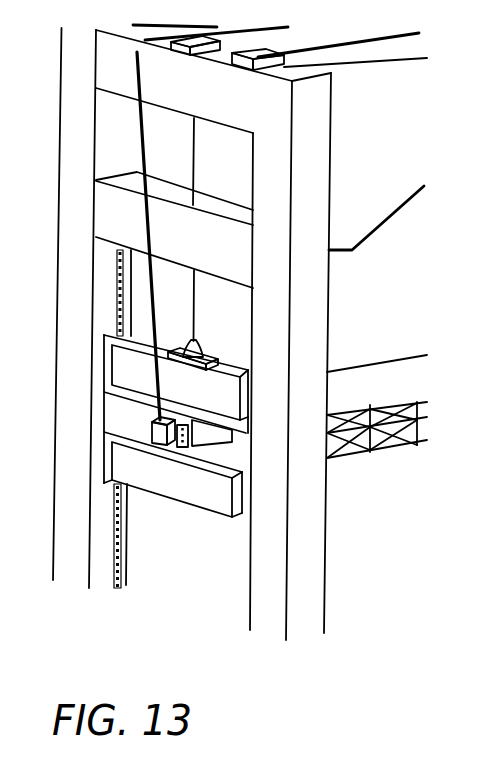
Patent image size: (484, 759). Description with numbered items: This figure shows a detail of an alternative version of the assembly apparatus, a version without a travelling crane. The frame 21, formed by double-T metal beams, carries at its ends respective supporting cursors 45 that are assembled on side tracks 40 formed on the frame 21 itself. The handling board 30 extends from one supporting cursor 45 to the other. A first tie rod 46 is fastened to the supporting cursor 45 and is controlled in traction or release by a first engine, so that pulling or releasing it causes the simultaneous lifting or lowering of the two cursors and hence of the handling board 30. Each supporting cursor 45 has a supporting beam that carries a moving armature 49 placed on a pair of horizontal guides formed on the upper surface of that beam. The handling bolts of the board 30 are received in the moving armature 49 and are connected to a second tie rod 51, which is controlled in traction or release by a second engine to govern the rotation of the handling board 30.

The frame 21 is at (307, 183).
The handling board 30 is at (402, 374).
The side tracks 40 is at (122, 568).
The supporting cursor 45 is at (220, 403).
The first tie rod 46 is at (197, 316).
The moving armature 49 is at (185, 447).
The second tie rod 51 is at (120, 287).